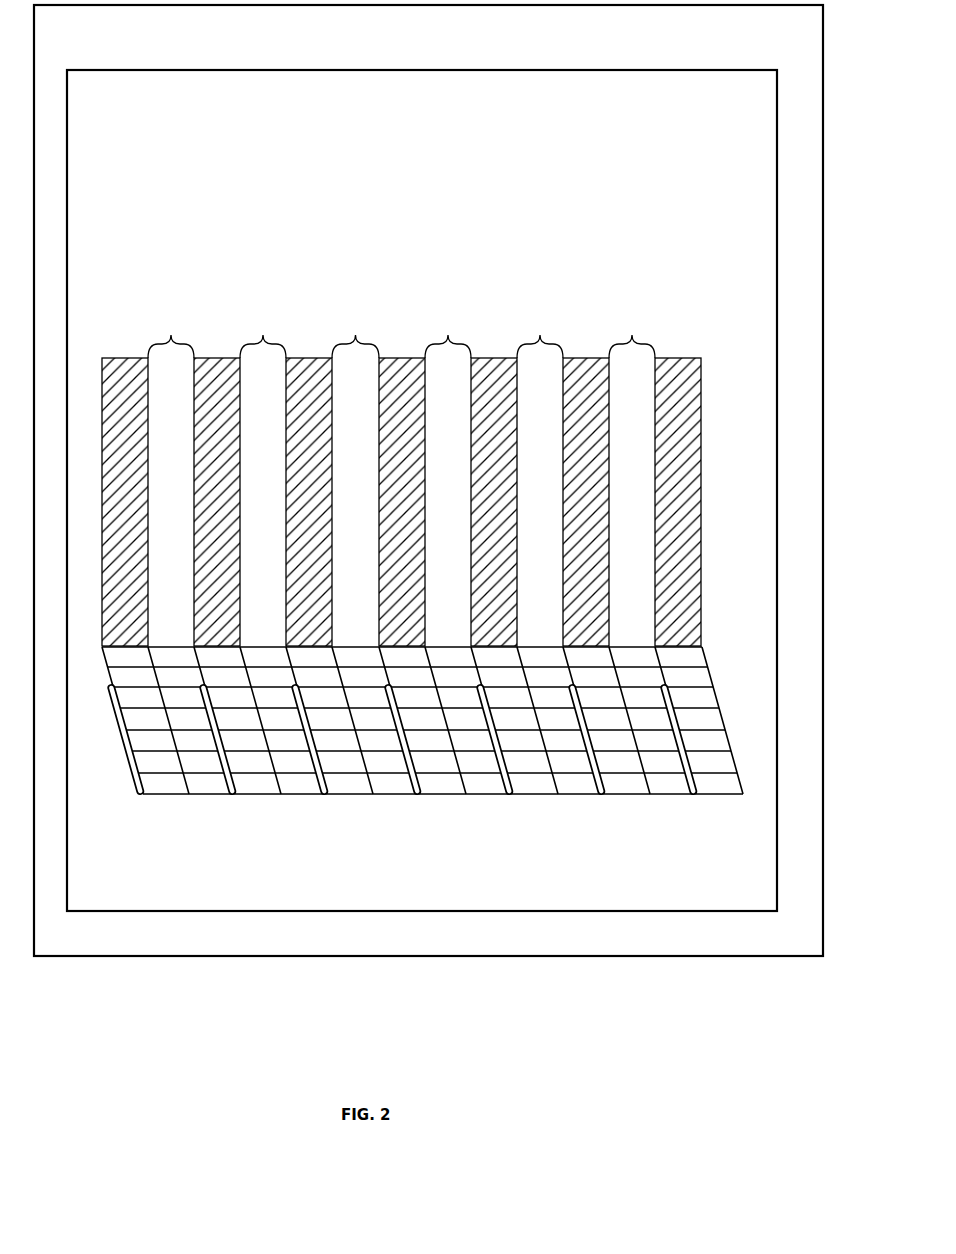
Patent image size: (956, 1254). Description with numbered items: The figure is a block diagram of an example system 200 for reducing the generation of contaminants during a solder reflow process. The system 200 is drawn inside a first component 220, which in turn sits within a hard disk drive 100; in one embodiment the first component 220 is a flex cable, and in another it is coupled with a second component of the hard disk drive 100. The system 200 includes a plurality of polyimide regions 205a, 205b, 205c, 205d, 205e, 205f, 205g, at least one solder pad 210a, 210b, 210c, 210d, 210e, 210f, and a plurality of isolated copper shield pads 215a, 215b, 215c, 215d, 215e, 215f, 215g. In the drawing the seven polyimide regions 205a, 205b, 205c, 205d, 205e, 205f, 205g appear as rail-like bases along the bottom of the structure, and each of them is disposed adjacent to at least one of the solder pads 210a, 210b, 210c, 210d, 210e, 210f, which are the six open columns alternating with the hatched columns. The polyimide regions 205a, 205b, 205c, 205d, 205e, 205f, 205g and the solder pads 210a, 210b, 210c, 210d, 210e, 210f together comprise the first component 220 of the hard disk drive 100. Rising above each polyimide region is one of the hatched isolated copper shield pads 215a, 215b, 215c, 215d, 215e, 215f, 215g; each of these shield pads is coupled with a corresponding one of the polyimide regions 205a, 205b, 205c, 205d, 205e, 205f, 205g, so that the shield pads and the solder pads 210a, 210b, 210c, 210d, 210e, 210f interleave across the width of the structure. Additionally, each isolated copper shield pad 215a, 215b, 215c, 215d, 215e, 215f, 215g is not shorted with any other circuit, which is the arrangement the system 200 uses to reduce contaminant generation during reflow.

The hard disk drive 100 is at (478, 51).
The first component 220 is at (534, 131).
The system 200 is at (718, 486).
The polyimide region 205a is at (126, 747).
The polyimide region 205b is at (218, 747).
The polyimide region 205c is at (310, 747).
The polyimide region 205d is at (403, 747).
The polyimide region 205e is at (495, 747).
The polyimide region 205f is at (587, 747).
The polyimide region 205g is at (679, 747).
The solder pad 210a is at (152, 333).
The solder pad 210b is at (244, 333).
The solder pad 210c is at (336, 333).
The solder pad 210d is at (429, 333).
The solder pad 210e is at (521, 333).
The solder pad 210f is at (613, 333).
The isolated copper shield pad 215a is at (107, 516).
The isolated copper shield pad 215b is at (199, 516).
The isolated copper shield pad 215c is at (291, 516).
The isolated copper shield pad 215d is at (384, 516).
The isolated copper shield pad 215e is at (476, 516).
The isolated copper shield pad 215f is at (568, 516).
The isolated copper shield pad 215g is at (660, 516).